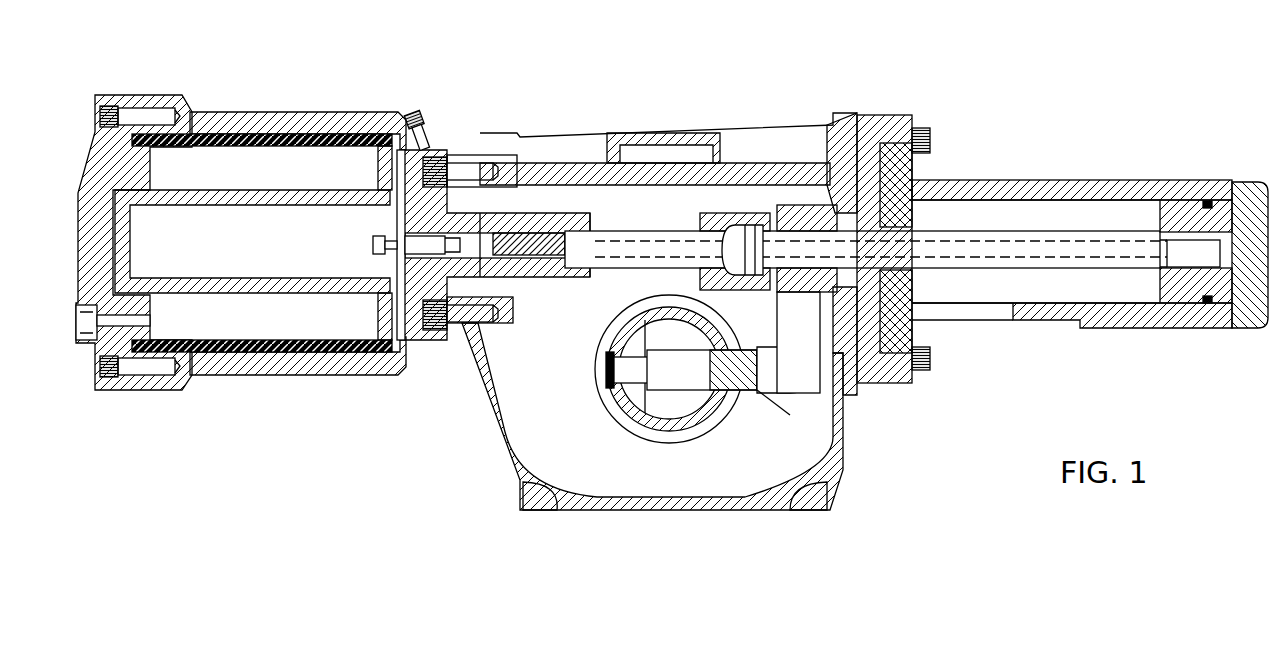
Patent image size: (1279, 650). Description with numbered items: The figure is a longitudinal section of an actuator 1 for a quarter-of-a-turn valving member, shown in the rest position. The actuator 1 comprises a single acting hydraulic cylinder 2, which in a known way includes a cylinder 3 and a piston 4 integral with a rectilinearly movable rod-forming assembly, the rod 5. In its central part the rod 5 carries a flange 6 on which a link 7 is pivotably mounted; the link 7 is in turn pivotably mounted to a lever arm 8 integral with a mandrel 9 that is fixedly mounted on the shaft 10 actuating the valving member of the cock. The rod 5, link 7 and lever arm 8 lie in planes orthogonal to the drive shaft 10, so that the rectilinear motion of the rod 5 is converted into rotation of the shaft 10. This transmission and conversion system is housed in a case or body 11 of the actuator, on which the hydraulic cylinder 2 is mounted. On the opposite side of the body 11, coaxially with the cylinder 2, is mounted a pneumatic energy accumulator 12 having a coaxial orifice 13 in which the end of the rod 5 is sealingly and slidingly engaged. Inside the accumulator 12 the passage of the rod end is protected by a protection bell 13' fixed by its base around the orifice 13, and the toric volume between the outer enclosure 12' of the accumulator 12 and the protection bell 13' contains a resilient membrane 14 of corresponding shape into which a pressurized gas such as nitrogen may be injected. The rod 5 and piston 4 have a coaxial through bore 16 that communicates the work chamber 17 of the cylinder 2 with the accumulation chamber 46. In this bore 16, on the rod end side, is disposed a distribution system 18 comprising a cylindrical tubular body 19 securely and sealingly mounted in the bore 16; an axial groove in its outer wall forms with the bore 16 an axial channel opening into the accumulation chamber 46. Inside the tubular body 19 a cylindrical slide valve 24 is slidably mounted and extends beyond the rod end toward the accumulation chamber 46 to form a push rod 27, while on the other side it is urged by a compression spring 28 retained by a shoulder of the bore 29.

The actuator 1 is at (687, 122).
The single acting hydraulic cylinder 2 is at (1036, 177).
The cylinder 3 is at (1080, 197).
The piston 4 is at (1183, 210).
The rod 5 is at (970, 227).
The flange 6 is at (800, 203).
The link 7 is at (807, 320).
The lever arm 8 is at (807, 380).
The mandrel 9 is at (720, 408).
The shaft 10 is at (653, 337).
The body 11 is at (697, 507).
The pneumatic energy accumulator 12 is at (298, 208).
The outer enclosure 12' is at (262, 196).
The coaxial orifice 13 is at (495, 190).
The protection bell 13' is at (393, 96).
The resilient membrane 14 is at (212, 140).
The coaxial through bore 16 is at (1063, 250).
The work chamber 17 is at (1210, 293).
The distribution system 18 is at (508, 228).
The cylindrical tubular body 19 is at (394, 237).
The cylindrical slide valve 24 is at (427, 249).
The push rod 27 is at (373, 243).
The compression spring 28 is at (549, 215).
The bore 29 is at (572, 233).
The accumulation chamber 46 is at (267, 253).